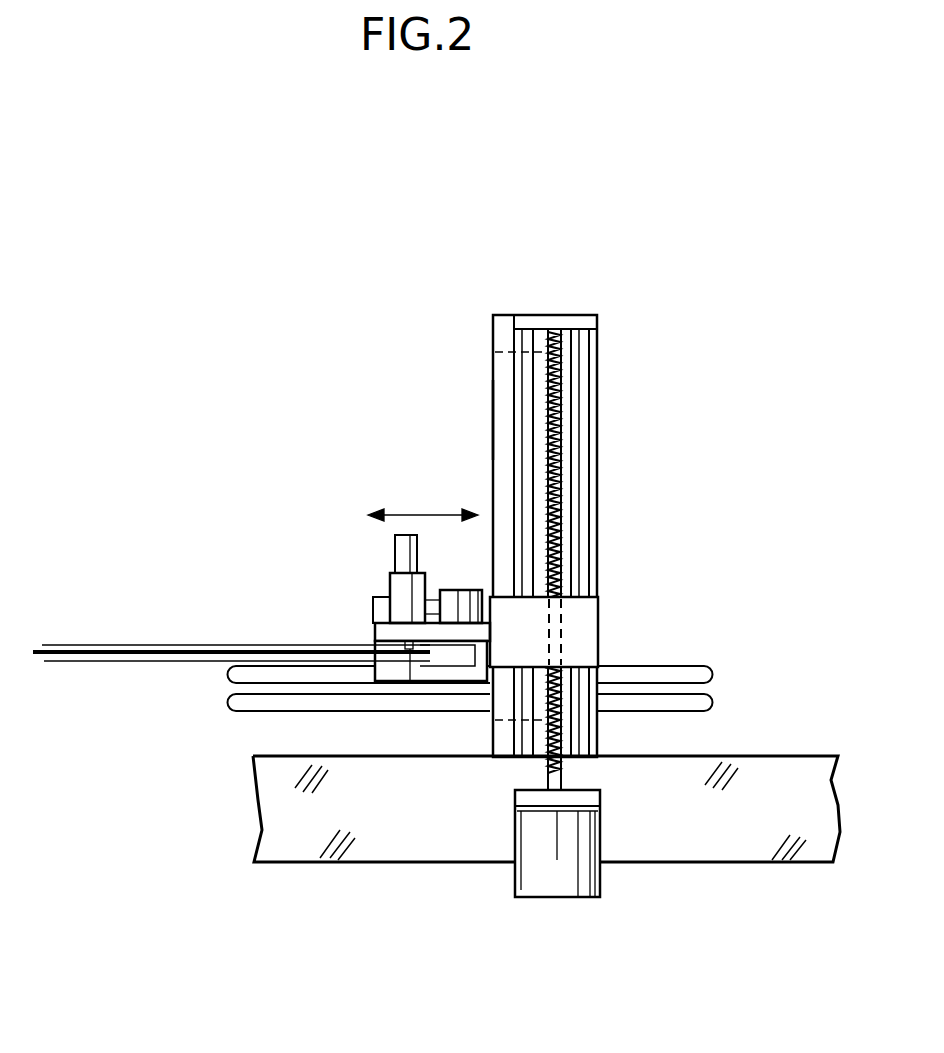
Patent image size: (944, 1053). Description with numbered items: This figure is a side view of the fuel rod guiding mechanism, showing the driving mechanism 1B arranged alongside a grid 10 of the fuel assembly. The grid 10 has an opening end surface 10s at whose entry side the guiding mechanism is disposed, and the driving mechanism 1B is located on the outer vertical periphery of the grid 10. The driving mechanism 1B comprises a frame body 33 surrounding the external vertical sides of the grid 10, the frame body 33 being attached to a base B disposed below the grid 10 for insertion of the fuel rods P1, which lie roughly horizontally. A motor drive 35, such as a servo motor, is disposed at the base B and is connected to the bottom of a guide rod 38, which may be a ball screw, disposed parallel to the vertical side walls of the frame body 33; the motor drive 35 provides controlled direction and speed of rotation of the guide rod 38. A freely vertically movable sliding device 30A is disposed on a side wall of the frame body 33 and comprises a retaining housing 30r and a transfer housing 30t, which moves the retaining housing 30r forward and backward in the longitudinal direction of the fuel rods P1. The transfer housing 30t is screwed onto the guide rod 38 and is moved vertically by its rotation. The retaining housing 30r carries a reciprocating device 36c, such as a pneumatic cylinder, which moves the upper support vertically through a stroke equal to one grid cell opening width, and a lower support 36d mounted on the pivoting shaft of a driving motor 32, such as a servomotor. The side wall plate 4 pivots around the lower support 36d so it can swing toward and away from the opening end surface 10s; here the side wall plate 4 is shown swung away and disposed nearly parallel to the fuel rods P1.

The driving mechanism 1B is at (420, 230).
The grid 10 is at (500, 368).
The opening end surface 10s is at (490, 421).
The frame body 33 is at (490, 515).
The guide rod 38 is at (552, 388).
The transfer housing 30t is at (600, 612).
The sliding device 30A is at (371, 567).
The driving motor 32 is at (393, 590).
The reciprocating device 36c is at (452, 562).
The lower support 36d is at (410, 681).
The retaining housing 30r is at (395, 681).
The fuel rods P1 is at (680, 666).
The side wall plate 4 is at (85, 662).
The base B is at (416, 848).
The motor drive 35 is at (550, 897).